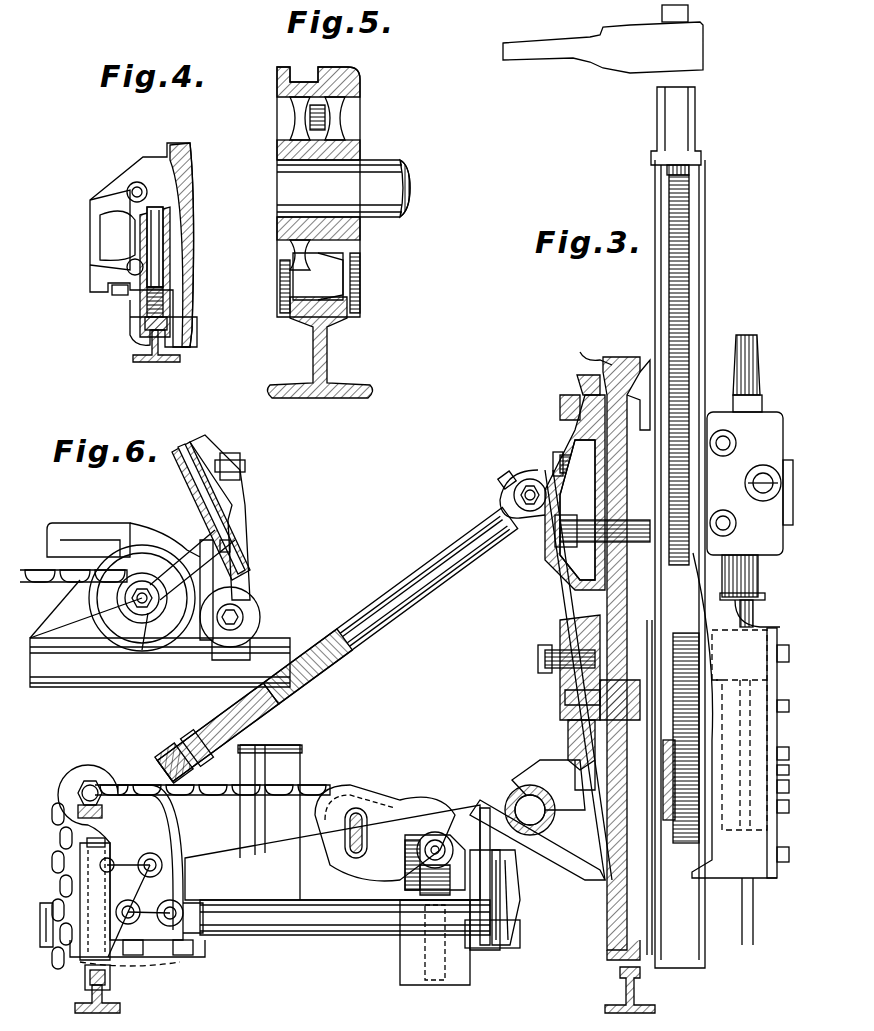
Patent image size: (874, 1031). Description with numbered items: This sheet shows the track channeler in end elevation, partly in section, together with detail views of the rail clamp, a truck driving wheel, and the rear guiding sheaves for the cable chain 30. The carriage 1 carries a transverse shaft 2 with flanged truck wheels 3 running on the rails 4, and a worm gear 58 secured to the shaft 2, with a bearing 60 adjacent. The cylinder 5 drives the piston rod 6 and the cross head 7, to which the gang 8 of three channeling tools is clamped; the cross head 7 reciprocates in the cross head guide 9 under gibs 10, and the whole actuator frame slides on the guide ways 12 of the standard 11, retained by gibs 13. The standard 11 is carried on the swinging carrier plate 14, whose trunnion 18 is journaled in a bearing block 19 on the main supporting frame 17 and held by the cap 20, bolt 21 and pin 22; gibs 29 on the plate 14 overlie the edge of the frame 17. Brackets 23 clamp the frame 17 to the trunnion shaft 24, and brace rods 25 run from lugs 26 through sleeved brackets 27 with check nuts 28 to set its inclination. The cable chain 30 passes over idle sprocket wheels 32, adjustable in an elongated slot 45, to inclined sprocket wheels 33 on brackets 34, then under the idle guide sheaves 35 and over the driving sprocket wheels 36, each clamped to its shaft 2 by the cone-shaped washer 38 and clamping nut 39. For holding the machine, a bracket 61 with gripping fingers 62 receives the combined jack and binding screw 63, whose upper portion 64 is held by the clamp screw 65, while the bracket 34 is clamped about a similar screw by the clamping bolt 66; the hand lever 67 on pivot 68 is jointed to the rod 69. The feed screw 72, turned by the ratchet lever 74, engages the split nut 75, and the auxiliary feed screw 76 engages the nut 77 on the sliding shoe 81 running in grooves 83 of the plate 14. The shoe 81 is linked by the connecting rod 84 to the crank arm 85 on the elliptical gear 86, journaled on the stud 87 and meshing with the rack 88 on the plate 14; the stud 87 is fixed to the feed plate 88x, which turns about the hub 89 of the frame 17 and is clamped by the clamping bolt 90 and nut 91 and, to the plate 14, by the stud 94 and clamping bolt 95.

In FIG. 3, the carriage 1 is at (250, 885).
In FIG. 5, the transverse shaft 2 is at (393, 165).
In FIG. 6, the transverse shaft 2 is at (150, 585).
In FIG. 3, the transverse shaft 2 is at (300, 930).
In FIG. 5, the truck wheel 3 is at (297, 92).
In FIG. 6, the truck wheel 3 is at (128, 556).
In FIG. 4, the rail 4 is at (160, 358).
In FIG. 5, the rail 4 is at (320, 358).
In FIG. 6, the rail 4 is at (110, 675).
In FIG. 3, the rail 4 is at (636, 997).
In FIG. 3, the cylinder 5 is at (765, 425).
In FIG. 3, the piston rod 6 is at (750, 612).
In FIG. 3, the cross head 7 is at (790, 462).
In FIG. 3, the gang of channeling tools 8 is at (748, 934).
In FIG. 3, the cross head guide 9 is at (745, 748).
In FIG. 3, the gib 10 is at (767, 681).
In FIG. 3, the standard 11 is at (690, 945).
In FIG. 3, the guide way 12 is at (703, 903).
In FIG. 3, the gib 13 is at (693, 607).
In FIG. 3, the swinging carrier plate 14 is at (629, 365).
In FIG. 3, the main supporting frame 17 is at (556, 545).
In FIG. 3, the trunnion 18 is at (558, 720).
In FIG. 3, the bearing block 19 is at (578, 726).
In FIG. 3, the cap 20 is at (565, 668).
In FIG. 3, the bolt 21 is at (578, 645).
In FIG. 3, the pin 22 is at (570, 690).
In FIG. 3, the bracket 23 is at (565, 845).
In FIG. 3, the trunnion shaft 24 is at (545, 840).
In FIG. 3, the brace rod 25 is at (352, 640).
In FIG. 3, the lug 26 is at (536, 470).
In FIG. 3, the sleeved bracket 27 is at (168, 755).
In FIG. 3, the check nut 28 is at (200, 745).
In FIG. 3, the gib 29 is at (603, 362).
In FIG. 6, the cable chain 30 is at (240, 567).
In FIG. 3, the cable chain 30 is at (220, 782).
In FIG. 3, the idle sprocket wheel 32 is at (362, 795).
In FIG. 6, the inclined sprocket wheel 33 is at (190, 455).
In FIG. 3, the inclined sprocket wheel 33 is at (73, 780).
In FIG. 6, the bracket 34 is at (232, 497).
In FIG. 3, the bracket 34 is at (120, 807).
In FIG. 6, the idle guide sheave 35 is at (252, 607).
In FIG. 3, the idle guide sheave 35 is at (52, 975).
In FIG. 6, the driving sprocket wheel 36 is at (140, 575).
In FIG. 3, the driving sprocket wheel 36 is at (48, 920).
In FIG. 6, the cone-shaped washer 38 is at (148, 615).
In FIG. 6, the clamping nut 39 is at (128, 603).
In FIG. 3, the clamping nut 39 is at (99, 914).
In FIG. 3, the elongated slot 45 is at (360, 850).
In FIG. 3, the worm gear 58 is at (432, 885).
In FIG. 5, the bearing 60 is at (333, 285).
In FIG. 4, the bracket 61 is at (133, 212).
In FIG. 4, the gripping finger 62 is at (135, 322).
In FIG. 3, the gripping finger 62 is at (110, 978).
In FIG. 4, the combined jack and binding screw 63 is at (160, 300).
In FIG. 3, the combined jack and binding screw 63 is at (150, 960).
In FIG. 4, the upper portion 64 is at (172, 202).
In FIG. 4, the clamp screw 65 is at (135, 185).
In FIG. 3, the clamping bolt 66 is at (112, 865).
In FIG. 3, the hand lever 67 is at (485, 760).
In FIG. 3, the pivot 68 is at (498, 940).
In FIG. 3, the rod 69 is at (510, 875).
In FIG. 3, the feed screw 72 is at (685, 497).
In FIG. 3, the ratchet lever 74 is at (577, 58).
In FIG. 3, the split nut 75 is at (740, 585).
In FIG. 3, the auxiliary feed screw 76 is at (688, 270).
In FIG. 3, the nut 77 is at (705, 800).
In FIG. 3, the sliding shoe 81 is at (647, 697).
In FIG. 3, the groove 83 is at (652, 893).
In FIG. 3, the connecting rod 84 is at (576, 659).
In FIG. 3, the crank arm 85 is at (663, 427).
In FIG. 3, the elliptical gear 86 is at (600, 383).
In FIG. 3, the stud 87 is at (558, 532).
In FIG. 3, the rack 88 is at (660, 428).
In FIG. 3, the feed plate 88x is at (578, 592).
In FIG. 3, the hub 89 is at (620, 694).
In FIG. 3, the clamping bolt 90 is at (583, 465).
In FIG. 3, the nut 91 is at (597, 445).
In FIG. 3, the stud 94 is at (520, 760).
In FIG. 3, the clamping bolt 95 is at (598, 780).